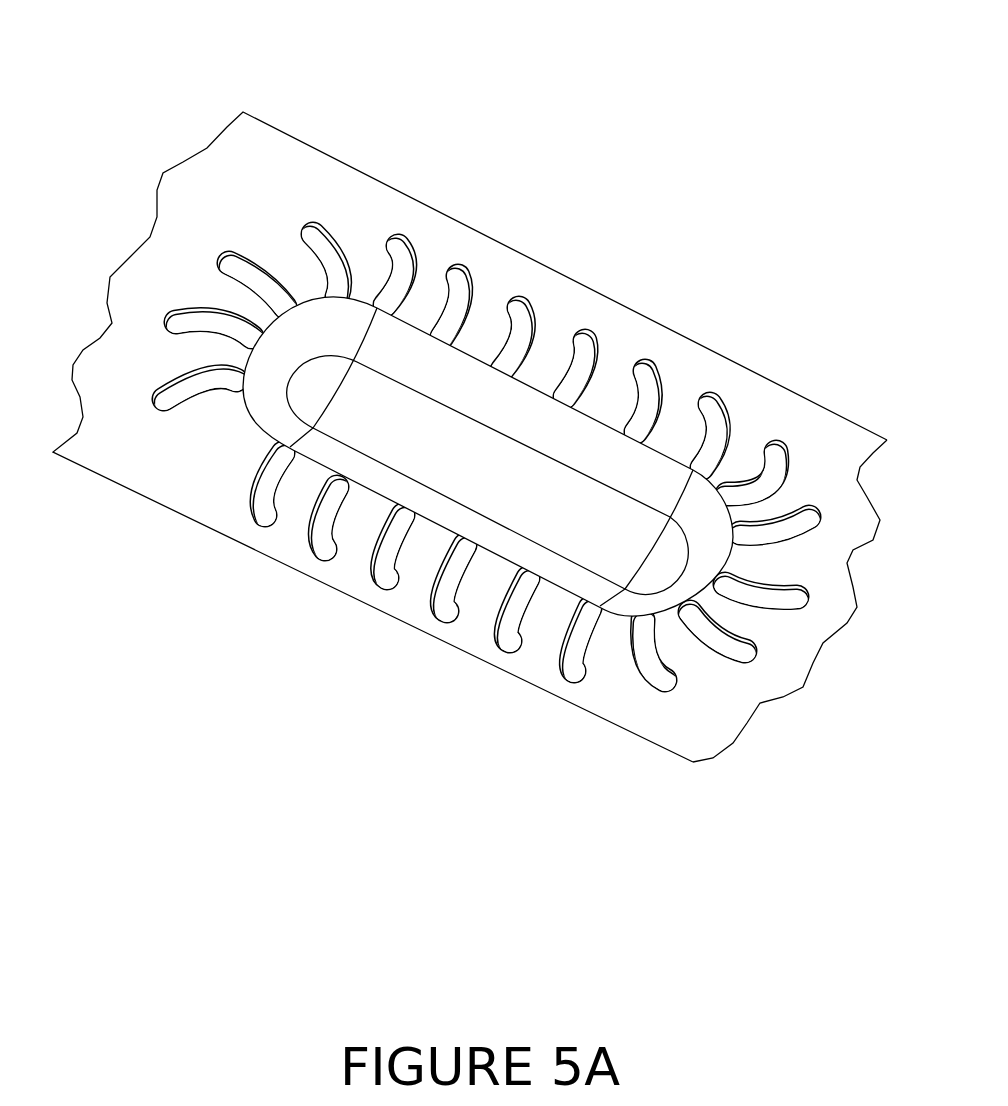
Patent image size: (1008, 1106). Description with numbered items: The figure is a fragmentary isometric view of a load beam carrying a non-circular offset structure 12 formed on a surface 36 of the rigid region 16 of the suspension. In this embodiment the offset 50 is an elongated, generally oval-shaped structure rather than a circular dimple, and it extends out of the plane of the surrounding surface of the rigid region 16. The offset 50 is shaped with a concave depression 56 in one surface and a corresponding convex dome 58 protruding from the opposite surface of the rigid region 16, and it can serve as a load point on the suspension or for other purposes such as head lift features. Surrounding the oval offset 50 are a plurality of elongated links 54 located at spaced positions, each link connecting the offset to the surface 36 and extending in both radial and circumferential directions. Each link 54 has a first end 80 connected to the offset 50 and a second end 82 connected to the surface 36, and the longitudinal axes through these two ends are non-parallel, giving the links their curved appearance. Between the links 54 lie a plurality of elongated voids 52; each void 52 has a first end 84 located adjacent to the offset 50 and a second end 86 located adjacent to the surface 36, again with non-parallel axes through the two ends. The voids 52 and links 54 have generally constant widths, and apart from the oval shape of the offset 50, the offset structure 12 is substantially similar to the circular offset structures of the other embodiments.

The offset structure 12 is at (343, 187).
The rigid region 16 is at (178, 130).
The surface 36 is at (845, 477).
The offset 50 is at (440, 312).
The elongated voids 52 is at (585, 357).
The elongated links 54 is at (688, 412).
The concave depression 56 is at (495, 488).
The convex dome 58 is at (583, 617).
The first end 80 is at (504, 574).
The second end 82 is at (424, 599).
The first end 84 is at (413, 517).
The second end 86 is at (273, 530).